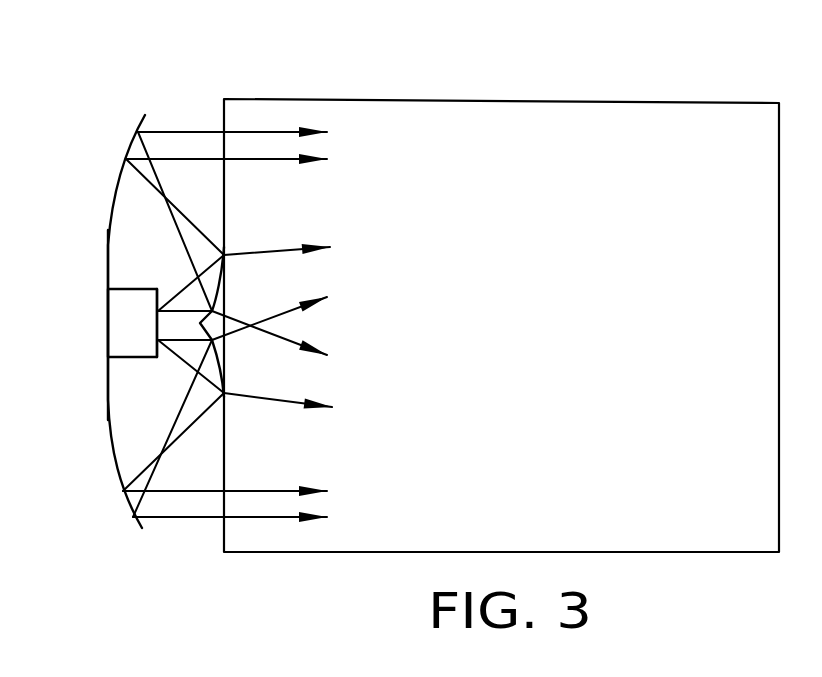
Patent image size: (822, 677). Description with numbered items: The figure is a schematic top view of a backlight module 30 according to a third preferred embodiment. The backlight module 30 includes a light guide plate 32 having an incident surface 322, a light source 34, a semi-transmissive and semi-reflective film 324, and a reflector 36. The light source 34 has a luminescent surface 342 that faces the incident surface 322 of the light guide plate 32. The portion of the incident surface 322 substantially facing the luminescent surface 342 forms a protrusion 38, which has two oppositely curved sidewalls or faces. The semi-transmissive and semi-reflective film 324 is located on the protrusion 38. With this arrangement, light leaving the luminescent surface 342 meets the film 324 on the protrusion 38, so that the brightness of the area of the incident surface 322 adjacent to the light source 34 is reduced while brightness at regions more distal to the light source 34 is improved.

The backlight module 30 is at (416, 63).
The light guide plate 32 is at (585, 82).
The incident surface 322 is at (210, 103).
The semi-transmissive and semi-reflective film 324 is at (205, 422).
The light source 34 is at (123, 340).
The luminescent surface 342 is at (170, 365).
The reflector 36 is at (107, 262).
The protrusion 38 is at (178, 322).